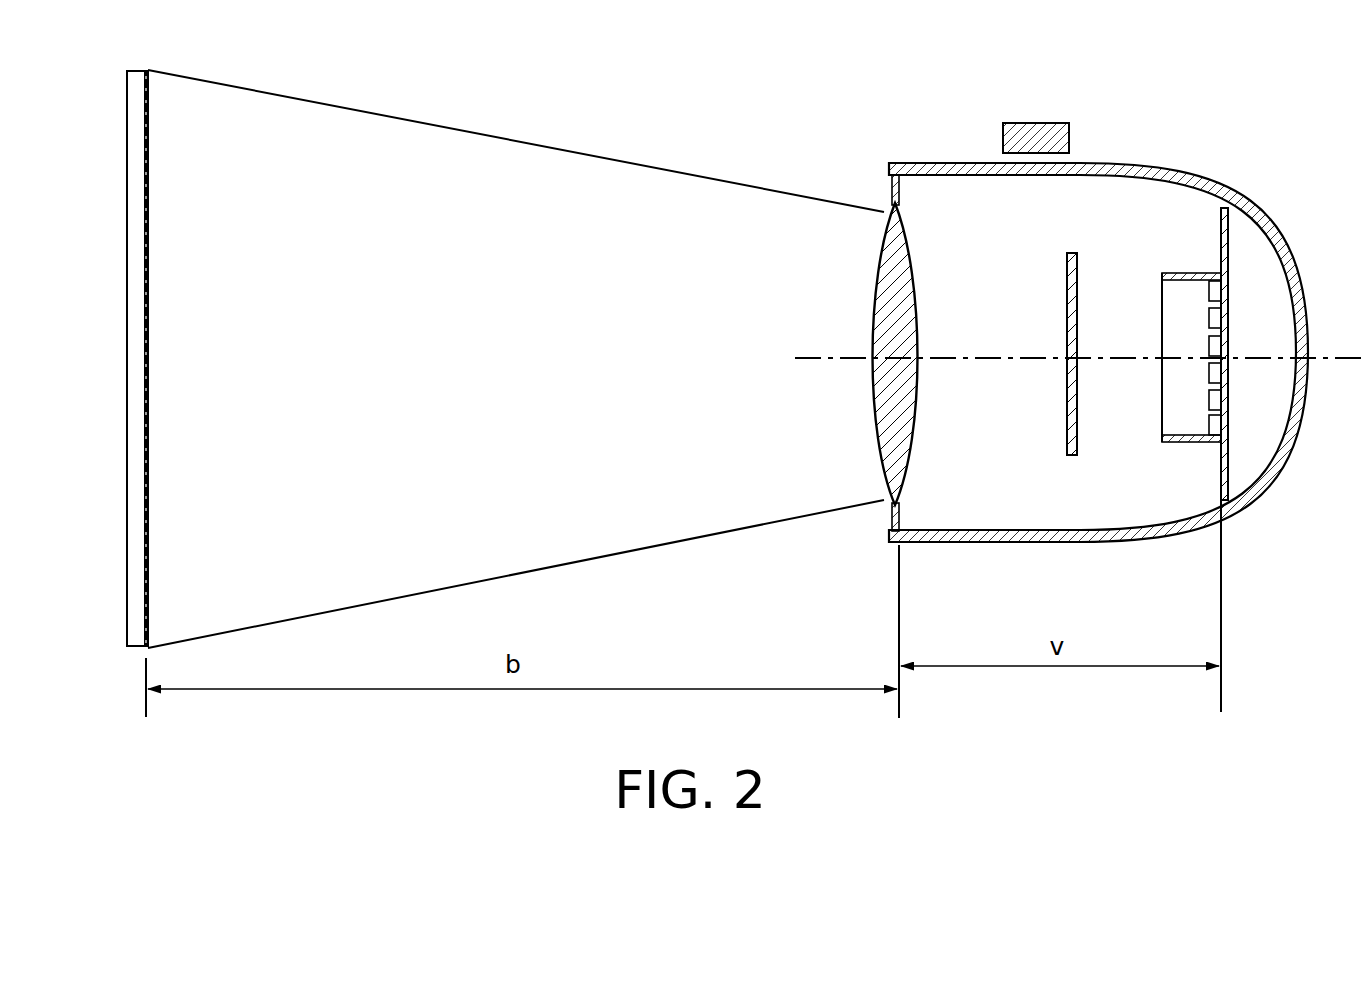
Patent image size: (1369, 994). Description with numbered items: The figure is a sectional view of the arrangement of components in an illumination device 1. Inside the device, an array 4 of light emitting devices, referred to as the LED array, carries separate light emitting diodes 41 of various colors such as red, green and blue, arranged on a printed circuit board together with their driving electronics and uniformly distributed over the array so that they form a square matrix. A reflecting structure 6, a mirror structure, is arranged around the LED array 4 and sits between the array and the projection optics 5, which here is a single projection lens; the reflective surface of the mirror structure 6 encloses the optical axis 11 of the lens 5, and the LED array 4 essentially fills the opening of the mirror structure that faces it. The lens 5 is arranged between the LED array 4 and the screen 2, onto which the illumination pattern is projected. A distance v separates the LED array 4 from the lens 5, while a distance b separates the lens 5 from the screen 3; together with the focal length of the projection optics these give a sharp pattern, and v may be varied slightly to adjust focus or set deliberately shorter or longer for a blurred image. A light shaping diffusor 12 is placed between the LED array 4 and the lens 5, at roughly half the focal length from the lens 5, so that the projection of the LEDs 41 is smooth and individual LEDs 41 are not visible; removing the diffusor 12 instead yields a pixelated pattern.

The illumination device 1 is at (907, 150).
The screen 2 is at (154, 418).
The screen 3 is at (124, 563).
The array of light emitting devices 4 is at (1188, 342).
The light emitting diodes 41 is at (1210, 317).
The projection optics 5 is at (876, 407).
The reflecting structure 6 is at (1183, 272).
The optical axis 11 is at (813, 358).
The light shaping diffusor 12 is at (1068, 418).